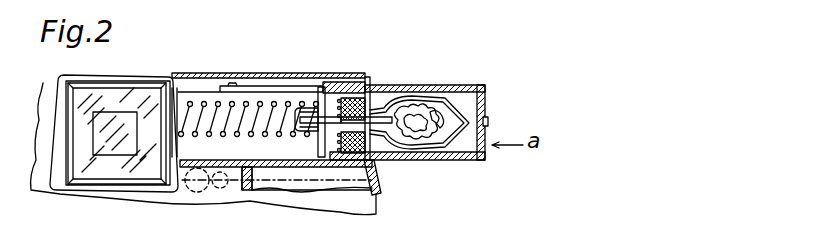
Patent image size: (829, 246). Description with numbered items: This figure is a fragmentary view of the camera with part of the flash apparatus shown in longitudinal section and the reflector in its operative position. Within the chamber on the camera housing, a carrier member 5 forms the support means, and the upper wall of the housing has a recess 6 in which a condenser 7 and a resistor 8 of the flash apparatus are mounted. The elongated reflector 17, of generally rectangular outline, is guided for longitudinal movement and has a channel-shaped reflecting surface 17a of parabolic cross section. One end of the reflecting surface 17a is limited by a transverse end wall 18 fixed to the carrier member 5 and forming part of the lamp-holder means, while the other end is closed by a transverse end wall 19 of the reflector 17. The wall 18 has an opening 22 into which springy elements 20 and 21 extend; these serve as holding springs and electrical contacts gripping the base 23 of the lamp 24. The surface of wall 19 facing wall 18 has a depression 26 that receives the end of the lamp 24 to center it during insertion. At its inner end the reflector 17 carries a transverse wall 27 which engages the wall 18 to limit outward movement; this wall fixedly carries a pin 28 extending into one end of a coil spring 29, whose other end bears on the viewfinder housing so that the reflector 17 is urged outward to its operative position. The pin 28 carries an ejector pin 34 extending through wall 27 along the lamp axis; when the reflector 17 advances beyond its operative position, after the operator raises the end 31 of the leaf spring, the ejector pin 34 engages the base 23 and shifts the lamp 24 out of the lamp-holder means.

The carrier member 5 is at (272, 163).
The recess 6 is at (240, 182).
The condenser 7 is at (199, 189).
The resistor 8 is at (221, 187).
The reflector 17 is at (451, 80).
The reflecting surface 17a is at (457, 146).
The transverse end wall 18 is at (368, 93).
The transverse end wall 19 is at (483, 102).
The springy element 20 is at (398, 100).
The springy element 21 is at (380, 128).
The opening 22 is at (356, 97).
The base 23 is at (360, 152).
The lamp 24 is at (440, 108).
The depression 26 is at (487, 122).
The transverse wall 27 is at (320, 87).
The pin 28 is at (297, 108).
The coil spring 29 is at (207, 101).
The end of leaf spring 31 is at (368, 105).
The ejector pin 34 is at (330, 125).